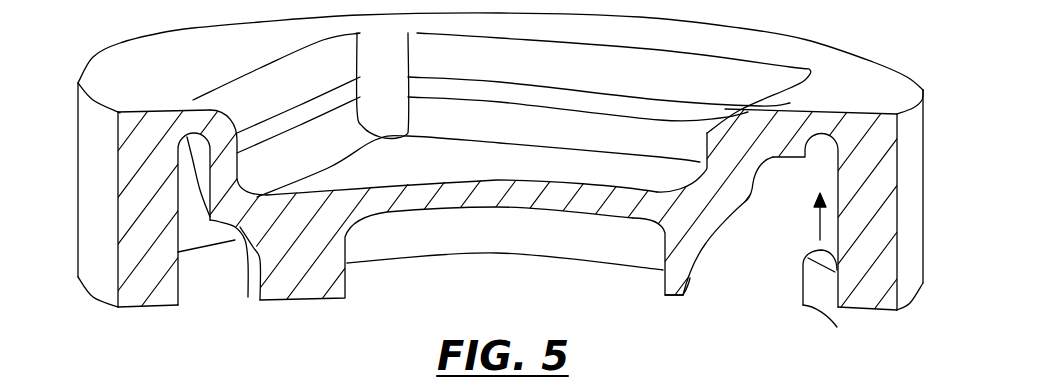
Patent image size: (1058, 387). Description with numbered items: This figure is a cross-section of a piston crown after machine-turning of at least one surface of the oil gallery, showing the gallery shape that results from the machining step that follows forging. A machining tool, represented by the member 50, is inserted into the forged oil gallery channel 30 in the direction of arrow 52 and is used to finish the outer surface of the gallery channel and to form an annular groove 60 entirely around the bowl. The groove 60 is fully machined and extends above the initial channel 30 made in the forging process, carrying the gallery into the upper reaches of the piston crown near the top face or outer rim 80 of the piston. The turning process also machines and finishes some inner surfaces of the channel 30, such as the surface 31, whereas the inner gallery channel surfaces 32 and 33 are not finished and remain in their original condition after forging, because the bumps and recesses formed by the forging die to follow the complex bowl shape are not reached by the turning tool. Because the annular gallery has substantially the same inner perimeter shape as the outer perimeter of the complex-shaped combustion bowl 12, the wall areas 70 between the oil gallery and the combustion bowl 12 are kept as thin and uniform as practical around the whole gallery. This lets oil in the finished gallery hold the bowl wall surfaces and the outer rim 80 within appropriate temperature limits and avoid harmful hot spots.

The combustion bowl 12 is at (403, 193).
The oil gallery channel 30 is at (180, 282).
The inner gallery surface 31 is at (257, 283).
The inner gallery channel surface 32 is at (745, 200).
The inner gallery channel surface 33 is at (698, 286).
The machining tool 50 is at (806, 283).
The arrow 52 is at (821, 227).
The annular groove 60 is at (186, 170).
The wall area 70 is at (224, 152).
The outer rim 80 is at (783, 128).